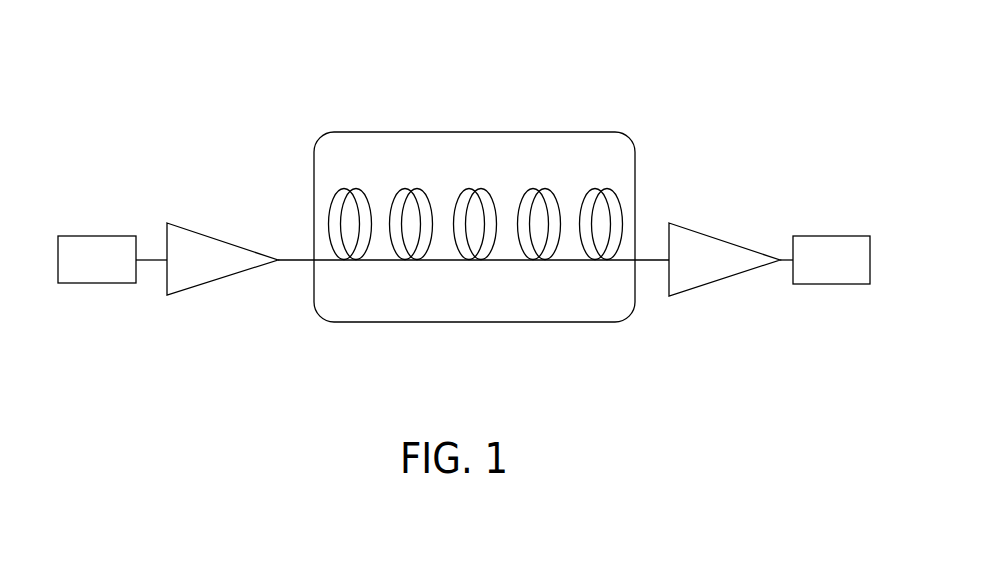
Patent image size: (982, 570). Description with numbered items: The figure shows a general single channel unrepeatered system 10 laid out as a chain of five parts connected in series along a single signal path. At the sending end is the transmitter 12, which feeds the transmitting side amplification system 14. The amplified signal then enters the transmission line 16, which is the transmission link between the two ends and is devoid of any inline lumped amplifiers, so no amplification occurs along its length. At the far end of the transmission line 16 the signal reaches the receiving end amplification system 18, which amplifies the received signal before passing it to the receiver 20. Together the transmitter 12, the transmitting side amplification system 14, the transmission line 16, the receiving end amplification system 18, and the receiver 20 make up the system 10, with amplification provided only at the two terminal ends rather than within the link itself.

The system 10 is at (438, 79).
The transmitter 12 is at (78, 284).
The transmitting side amplification system 14 is at (223, 278).
The transmission line 16 is at (355, 260).
The receiving end amplification system 18 is at (725, 278).
The receiver 20 is at (842, 284).